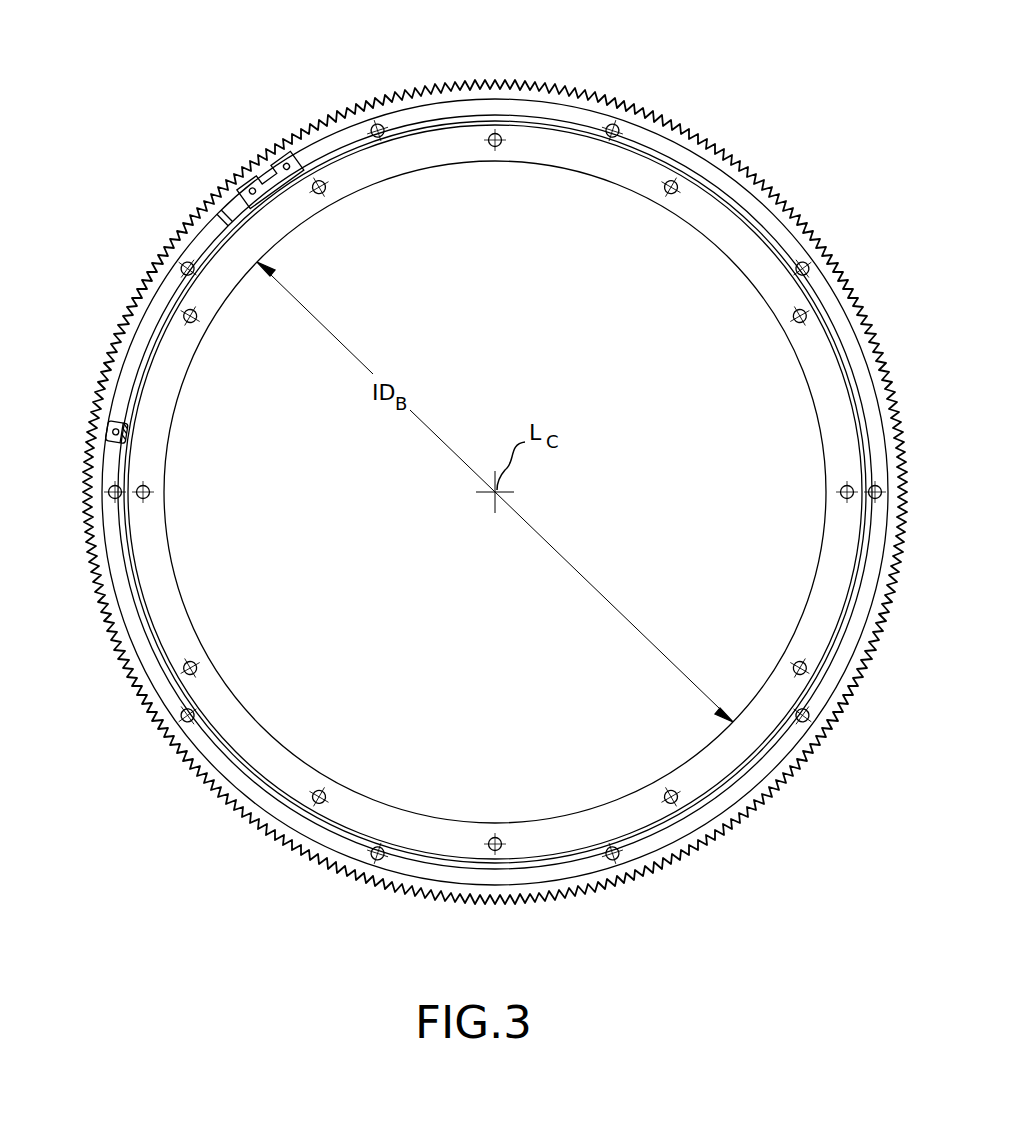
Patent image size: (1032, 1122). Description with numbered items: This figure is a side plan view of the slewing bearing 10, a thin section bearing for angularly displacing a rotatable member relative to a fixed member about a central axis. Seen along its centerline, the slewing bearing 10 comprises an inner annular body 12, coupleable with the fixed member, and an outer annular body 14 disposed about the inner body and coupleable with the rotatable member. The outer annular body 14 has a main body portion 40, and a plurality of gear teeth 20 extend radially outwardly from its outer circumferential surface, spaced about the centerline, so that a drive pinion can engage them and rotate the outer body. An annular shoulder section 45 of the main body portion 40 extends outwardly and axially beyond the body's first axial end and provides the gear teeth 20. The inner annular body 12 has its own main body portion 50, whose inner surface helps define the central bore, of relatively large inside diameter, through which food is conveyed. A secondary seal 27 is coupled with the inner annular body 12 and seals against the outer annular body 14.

The slewing bearing 10 is at (96, 164).
The inner annular body 12 is at (206, 460).
The outer annular body 14 is at (66, 433).
The gear teeth 20 is at (440, 88).
The secondary seal 27 is at (160, 633).
The main body portion 40 is at (690, 160).
The annular shoulder section 45 is at (582, 878).
The main body portion 50 is at (708, 228).